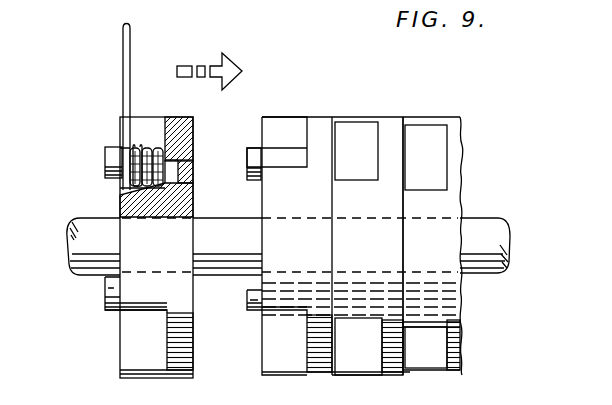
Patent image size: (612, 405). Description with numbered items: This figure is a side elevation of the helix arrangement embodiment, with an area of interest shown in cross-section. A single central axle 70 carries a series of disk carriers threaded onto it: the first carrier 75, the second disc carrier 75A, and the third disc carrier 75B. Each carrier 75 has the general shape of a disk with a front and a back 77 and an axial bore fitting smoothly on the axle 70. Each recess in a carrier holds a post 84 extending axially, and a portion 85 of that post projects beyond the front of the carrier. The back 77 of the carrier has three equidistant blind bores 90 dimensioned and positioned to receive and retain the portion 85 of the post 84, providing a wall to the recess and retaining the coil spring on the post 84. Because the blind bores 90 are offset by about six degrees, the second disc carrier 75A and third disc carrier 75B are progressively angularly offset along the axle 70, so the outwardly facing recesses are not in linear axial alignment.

The central axle 70 is at (493, 228).
The carrier 75 is at (187, 138).
The second disc carrier 75A is at (312, 250).
The third disc carrier 75B is at (383, 250).
The back 77 is at (195, 345).
The post 84 is at (283, 160).
The portion of the post 85 is at (119, 160).
The blind bores 90 is at (185, 173).